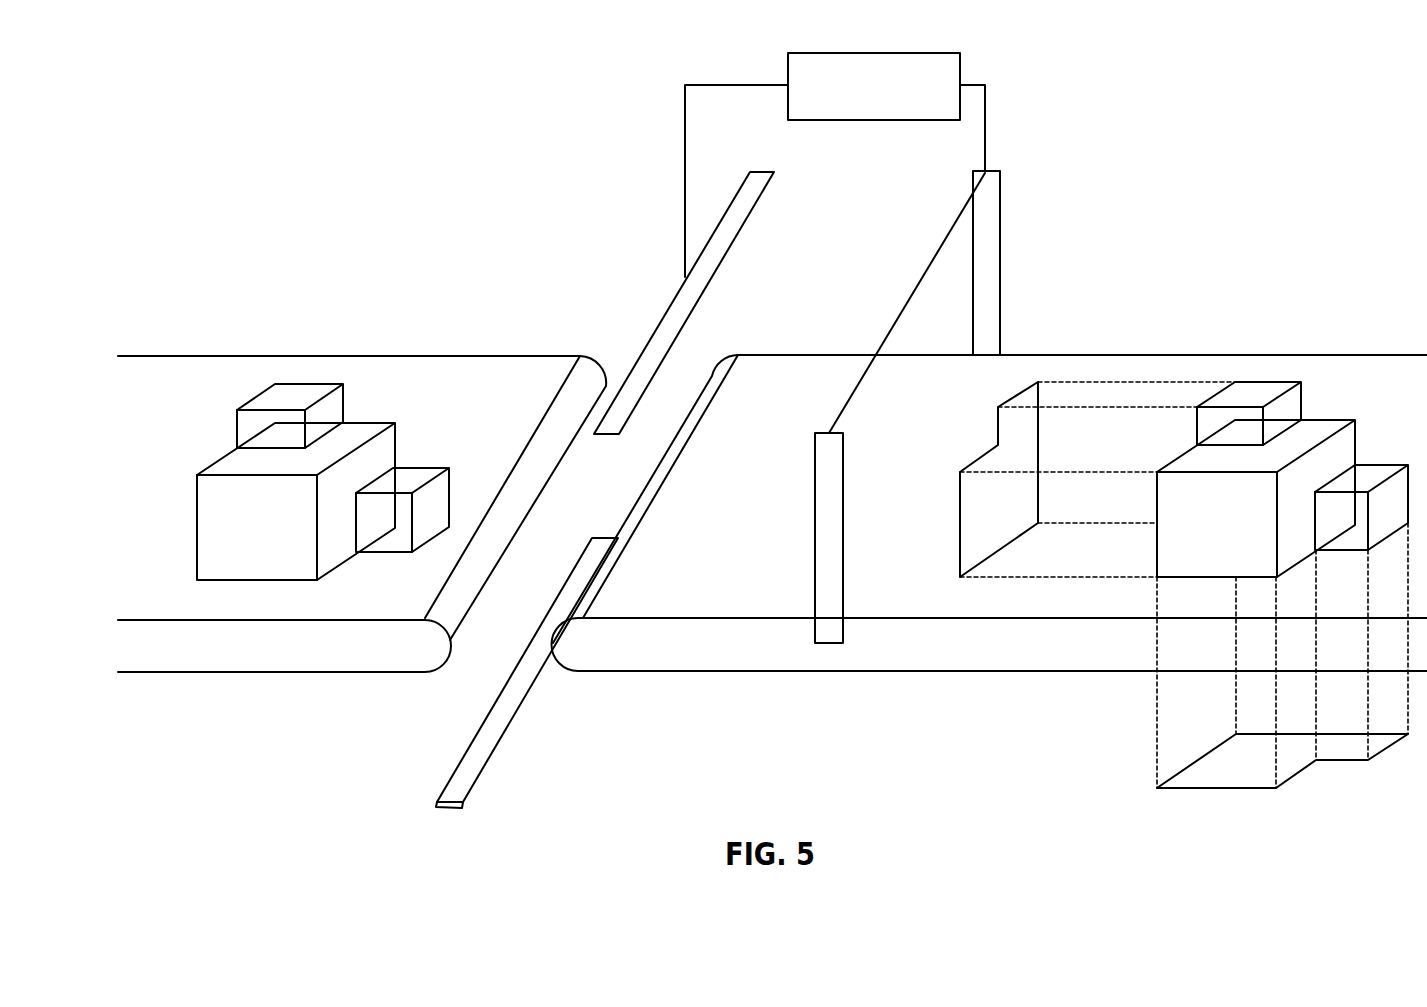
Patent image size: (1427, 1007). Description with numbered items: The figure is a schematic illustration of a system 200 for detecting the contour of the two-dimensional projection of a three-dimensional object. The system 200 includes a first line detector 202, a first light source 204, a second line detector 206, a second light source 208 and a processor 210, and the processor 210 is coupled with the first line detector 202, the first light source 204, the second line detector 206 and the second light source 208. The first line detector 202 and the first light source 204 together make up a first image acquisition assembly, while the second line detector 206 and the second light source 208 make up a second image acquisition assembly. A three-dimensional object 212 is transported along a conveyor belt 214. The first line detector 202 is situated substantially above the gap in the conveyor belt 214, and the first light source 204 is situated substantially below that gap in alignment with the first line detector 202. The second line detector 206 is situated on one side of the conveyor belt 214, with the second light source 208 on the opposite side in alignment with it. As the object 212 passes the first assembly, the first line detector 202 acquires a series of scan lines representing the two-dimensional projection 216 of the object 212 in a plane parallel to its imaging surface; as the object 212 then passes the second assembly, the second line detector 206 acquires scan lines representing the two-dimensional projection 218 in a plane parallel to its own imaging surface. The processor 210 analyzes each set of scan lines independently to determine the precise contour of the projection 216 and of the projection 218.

The system 200 is at (262, 130).
The first line detector 202 is at (771, 175).
The first light source 204 is at (478, 782).
The second line detector 206 is at (1000, 208).
The second light source 208 is at (843, 490).
The processor 210 is at (962, 63).
The three-dimensional object 212 is at (198, 484).
The conveyor belt 214 is at (212, 674).
The two-dimensional projection 216 is at (1210, 789).
The two-dimensional projection 218 is at (971, 463).